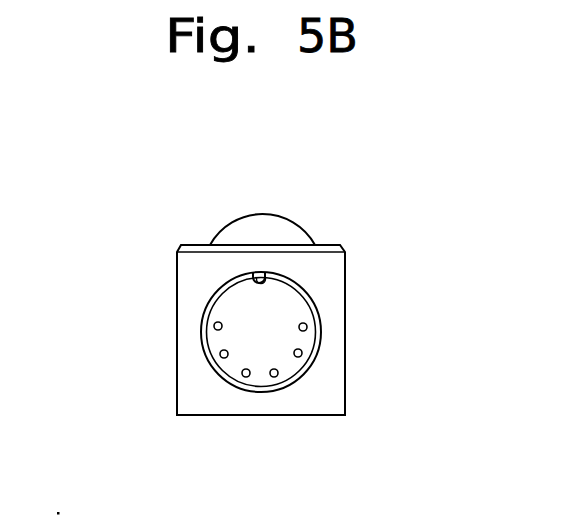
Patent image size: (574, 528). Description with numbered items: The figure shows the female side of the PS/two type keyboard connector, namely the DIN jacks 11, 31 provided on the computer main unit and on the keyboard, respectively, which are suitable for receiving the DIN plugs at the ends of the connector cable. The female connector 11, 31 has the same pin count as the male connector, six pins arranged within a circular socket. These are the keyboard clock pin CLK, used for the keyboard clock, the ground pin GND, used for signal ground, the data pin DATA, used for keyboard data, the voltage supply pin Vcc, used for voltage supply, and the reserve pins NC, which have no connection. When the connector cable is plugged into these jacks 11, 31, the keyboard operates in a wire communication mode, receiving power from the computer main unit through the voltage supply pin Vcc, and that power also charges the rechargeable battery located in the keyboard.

The DIN jack 11 is at (193, 214).
The DIN jack 31 is at (187, 158).
The keyboard clock pin CLK is at (159, 352).
The ground pin GND is at (173, 398).
The data pin DATA is at (245, 377).
The voltage supply pin Vcc is at (319, 421).
The reserve pins NC is at (307, 326).